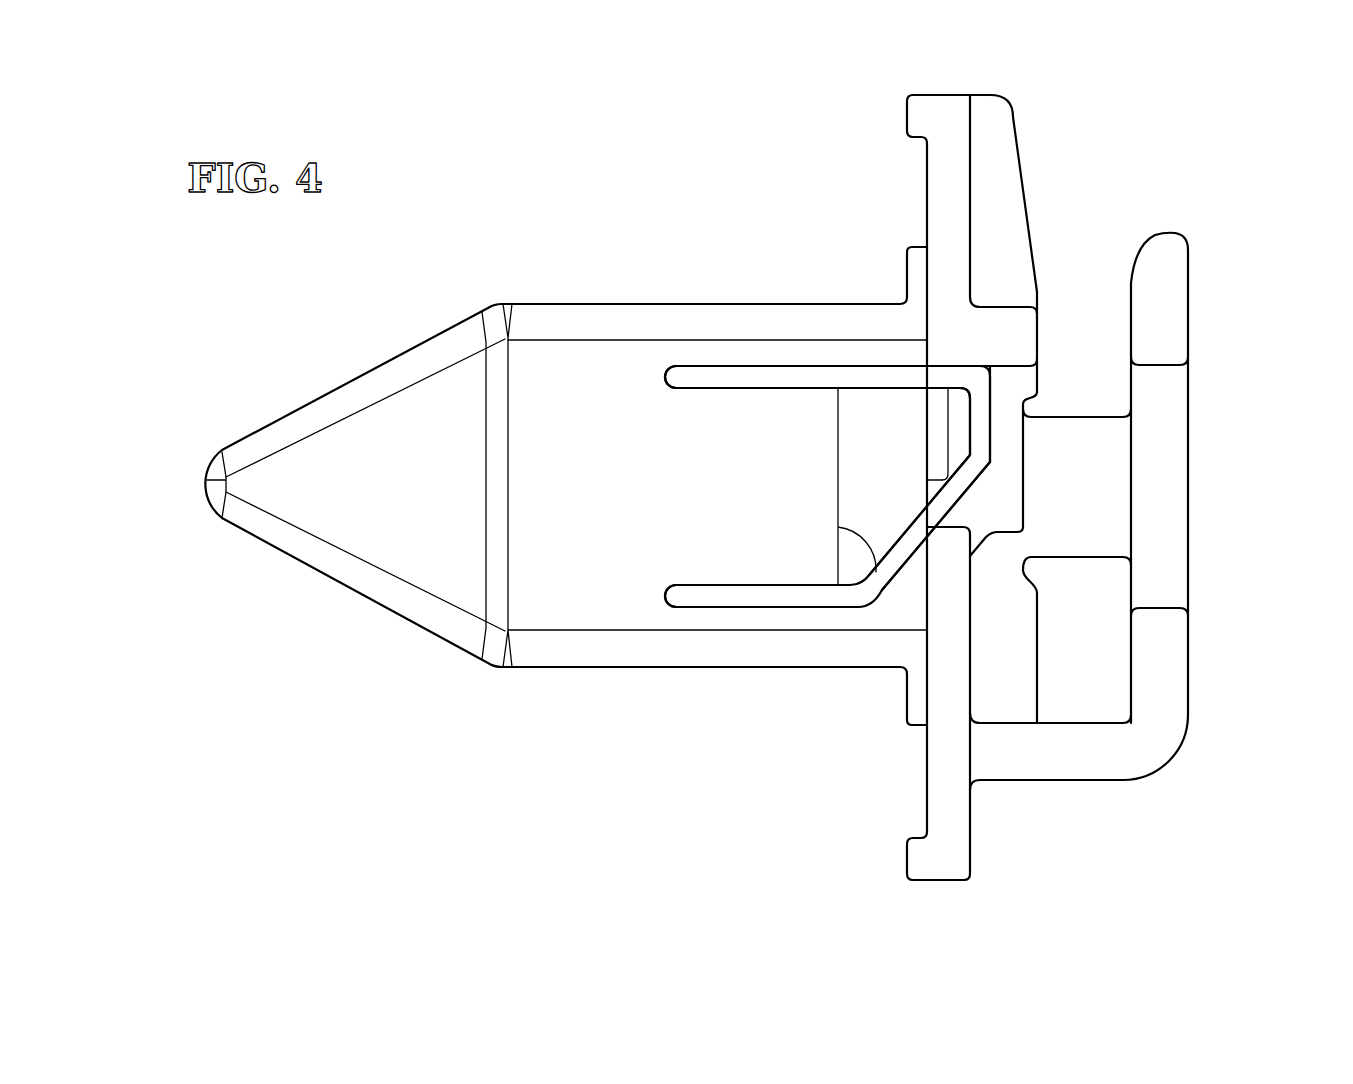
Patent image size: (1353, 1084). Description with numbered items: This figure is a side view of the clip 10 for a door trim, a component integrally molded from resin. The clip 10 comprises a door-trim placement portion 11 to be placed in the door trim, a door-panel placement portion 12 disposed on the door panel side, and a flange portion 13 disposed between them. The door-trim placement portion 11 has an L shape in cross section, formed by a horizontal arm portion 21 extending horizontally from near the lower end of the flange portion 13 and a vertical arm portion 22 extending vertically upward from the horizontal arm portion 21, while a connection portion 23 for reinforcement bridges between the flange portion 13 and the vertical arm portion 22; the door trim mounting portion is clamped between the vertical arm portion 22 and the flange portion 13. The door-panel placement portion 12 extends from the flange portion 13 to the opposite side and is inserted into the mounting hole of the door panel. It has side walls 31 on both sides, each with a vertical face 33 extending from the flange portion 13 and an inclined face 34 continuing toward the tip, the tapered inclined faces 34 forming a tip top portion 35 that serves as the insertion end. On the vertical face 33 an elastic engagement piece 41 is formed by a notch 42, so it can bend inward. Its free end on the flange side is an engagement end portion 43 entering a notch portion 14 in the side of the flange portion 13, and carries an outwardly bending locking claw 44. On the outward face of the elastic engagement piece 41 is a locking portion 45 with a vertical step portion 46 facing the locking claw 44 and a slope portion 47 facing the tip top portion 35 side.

The clip 10 is at (1157, 168).
The door-trim placement portion 11 is at (1192, 272).
The door-panel placement portion 12 is at (435, 333).
The flange portion 13 is at (940, 882).
The notch portion 14 is at (955, 526).
The horizontal arm portion 21 is at (1087, 782).
The vertical arm portion 22 is at (1195, 642).
The connection portion 23 is at (1077, 415).
The side wall 31 is at (585, 538).
The vertical face 33 is at (662, 497).
The inclined face 34 is at (392, 518).
The tip top portion 35 is at (205, 482).
The elastic engagement piece 41 is at (765, 390).
The notch 42 is at (792, 594).
The engagement end portion 43 is at (970, 438).
The locking claw 44 is at (958, 415).
The locking portion 45 is at (808, 462).
The vertical step portion 46 is at (879, 566).
The slope portion 47 is at (730, 525).